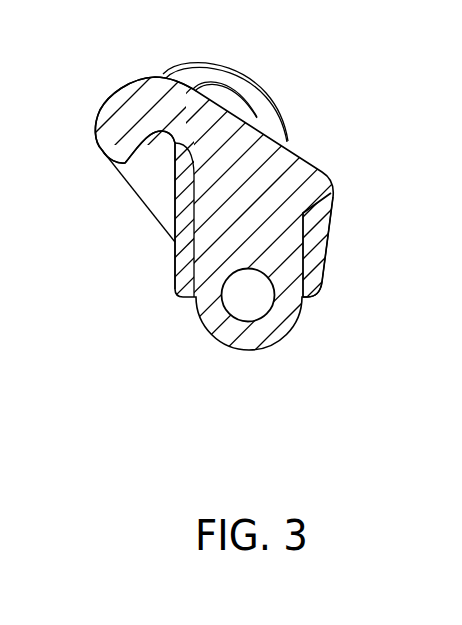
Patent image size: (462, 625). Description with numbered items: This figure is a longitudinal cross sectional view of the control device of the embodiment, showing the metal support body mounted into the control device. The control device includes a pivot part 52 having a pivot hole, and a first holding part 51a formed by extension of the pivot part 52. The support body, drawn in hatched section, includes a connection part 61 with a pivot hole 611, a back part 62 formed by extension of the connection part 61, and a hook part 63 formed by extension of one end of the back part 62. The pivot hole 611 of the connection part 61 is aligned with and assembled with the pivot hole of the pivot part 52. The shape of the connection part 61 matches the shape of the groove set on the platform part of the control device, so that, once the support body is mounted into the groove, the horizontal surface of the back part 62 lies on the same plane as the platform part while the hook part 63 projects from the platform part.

The first holding part 51a is at (243, 70).
The pivot part 52 is at (177, 262).
The connection part 61 is at (297, 245).
The pivot hole 611 is at (274, 305).
The back part 62 is at (270, 121).
The hook part 63 is at (100, 150).